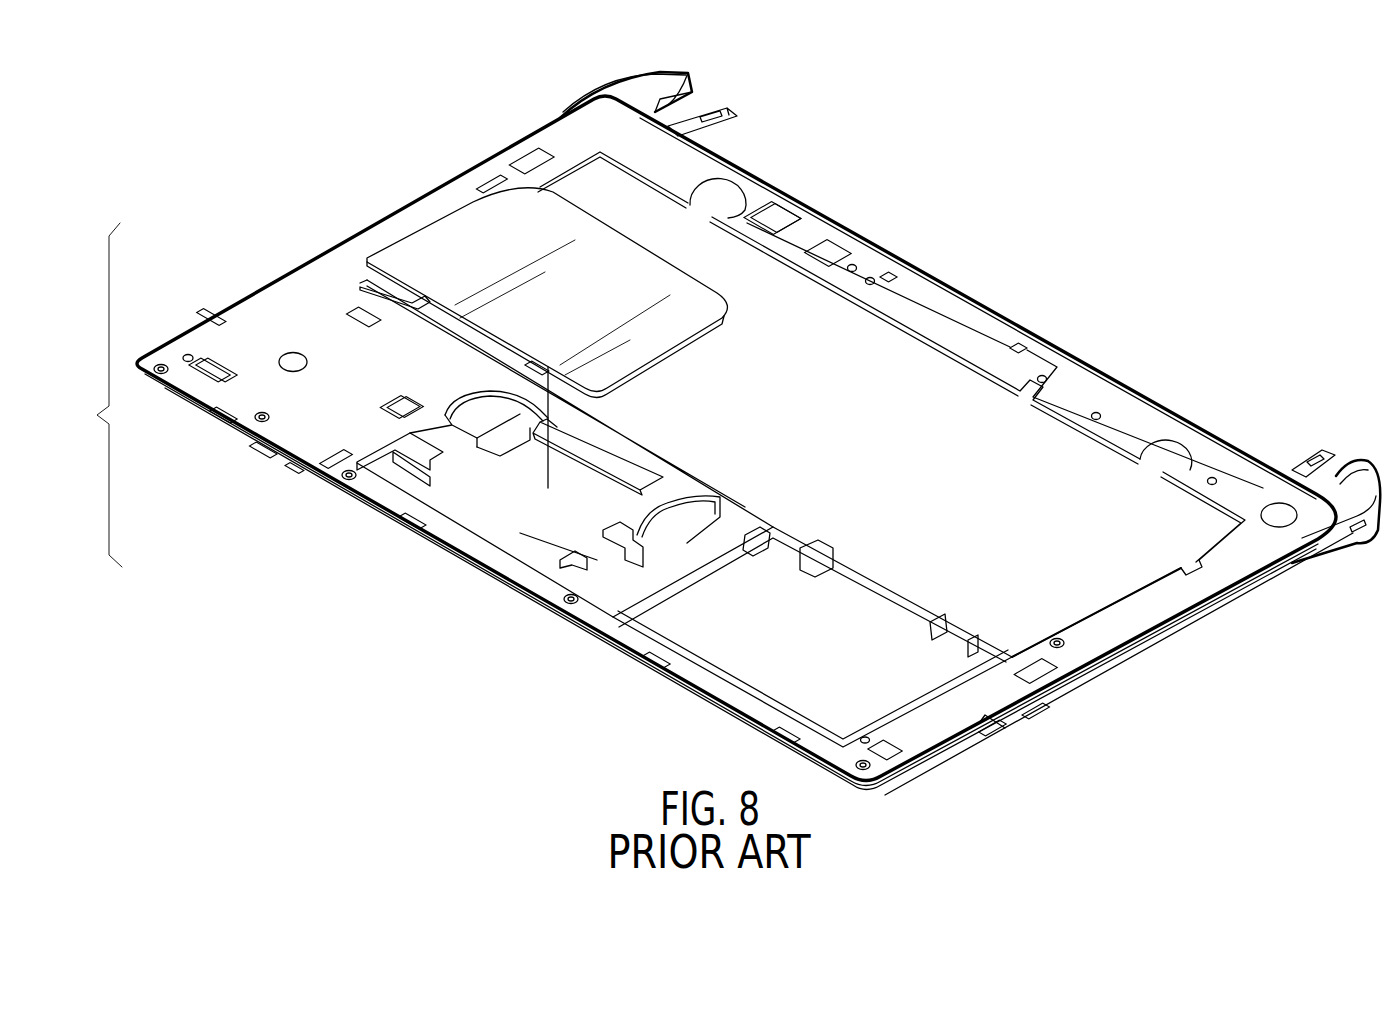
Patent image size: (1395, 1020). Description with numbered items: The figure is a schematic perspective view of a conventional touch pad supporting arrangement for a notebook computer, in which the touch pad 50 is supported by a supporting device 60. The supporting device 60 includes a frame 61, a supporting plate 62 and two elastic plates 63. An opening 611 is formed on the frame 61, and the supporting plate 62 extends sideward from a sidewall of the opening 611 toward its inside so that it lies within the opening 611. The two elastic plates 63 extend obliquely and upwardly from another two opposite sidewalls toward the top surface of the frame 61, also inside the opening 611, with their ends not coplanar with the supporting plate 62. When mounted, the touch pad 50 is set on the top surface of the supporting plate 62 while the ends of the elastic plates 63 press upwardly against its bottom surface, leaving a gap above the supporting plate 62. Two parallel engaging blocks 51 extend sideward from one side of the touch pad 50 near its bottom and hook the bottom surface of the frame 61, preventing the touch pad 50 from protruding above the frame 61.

The touch pad 50 is at (447, 228).
The engaging blocks 51 is at (420, 302).
The supporting device 60 is at (1148, 611).
The frame 61 is at (943, 736).
The opening 611 is at (390, 470).
The supporting plate 62 is at (578, 458).
The elastic plates 63 is at (648, 530).